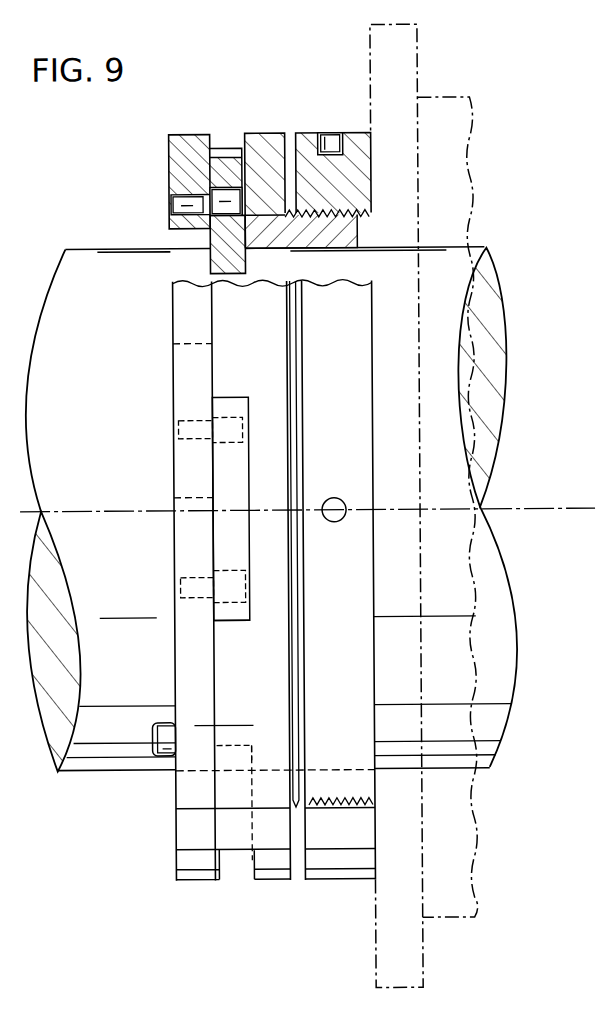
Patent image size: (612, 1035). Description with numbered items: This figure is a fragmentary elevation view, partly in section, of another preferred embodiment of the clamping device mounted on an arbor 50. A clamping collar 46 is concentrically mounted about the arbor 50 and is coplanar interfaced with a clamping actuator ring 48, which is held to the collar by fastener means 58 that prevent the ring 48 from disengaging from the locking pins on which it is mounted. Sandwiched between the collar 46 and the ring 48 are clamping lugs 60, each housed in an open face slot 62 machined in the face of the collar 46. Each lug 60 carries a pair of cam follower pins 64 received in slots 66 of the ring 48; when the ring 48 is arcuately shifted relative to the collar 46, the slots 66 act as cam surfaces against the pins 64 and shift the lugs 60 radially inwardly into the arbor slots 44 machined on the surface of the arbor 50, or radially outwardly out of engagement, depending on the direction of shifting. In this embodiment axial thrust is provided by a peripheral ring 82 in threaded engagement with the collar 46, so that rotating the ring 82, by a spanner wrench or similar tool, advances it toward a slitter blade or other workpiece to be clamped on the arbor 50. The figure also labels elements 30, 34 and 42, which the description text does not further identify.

The support plate 30 is at (420, 957).
The mounting plate 34 is at (470, 880).
The clamping assembly 42 is at (267, 120).
The arbor slots 44 is at (239, 275).
The clamping collar 46 is at (276, 140).
The clamping actuator ring 48 is at (176, 172).
The arbor 50 is at (498, 596).
The fastener means 58 is at (162, 730).
The clamping lugs 60 is at (228, 165).
The open face slots 62 is at (232, 616).
The cam follower pins 64 is at (250, 428).
The slots 66 is at (180, 344).
The peripheral ring 82 is at (356, 148).